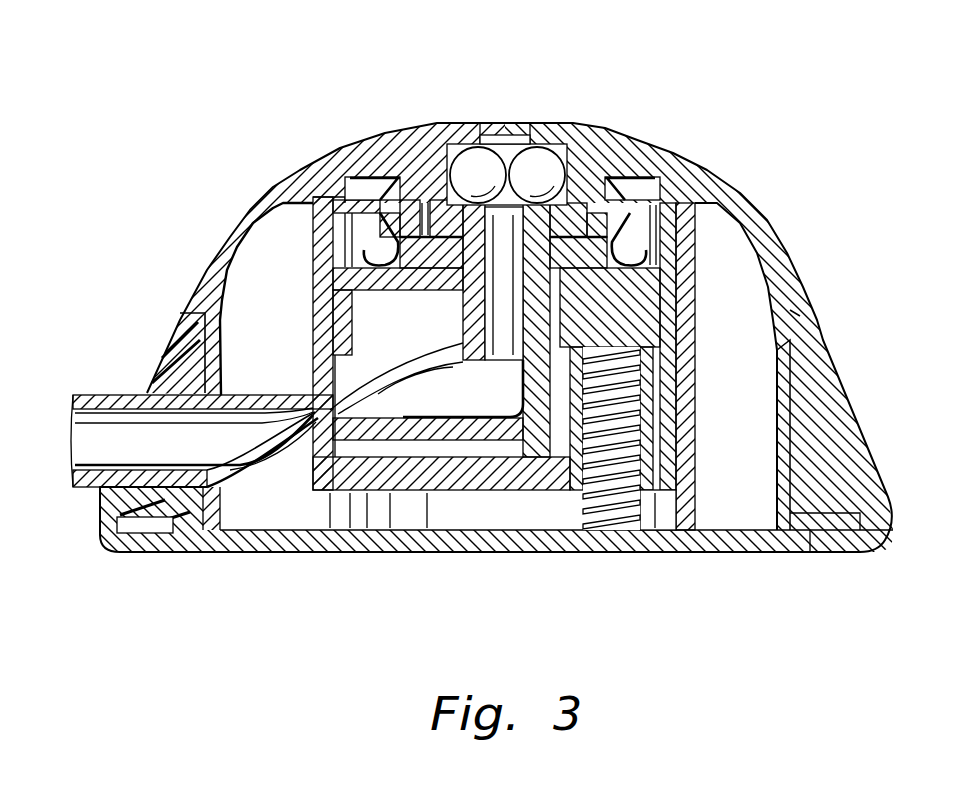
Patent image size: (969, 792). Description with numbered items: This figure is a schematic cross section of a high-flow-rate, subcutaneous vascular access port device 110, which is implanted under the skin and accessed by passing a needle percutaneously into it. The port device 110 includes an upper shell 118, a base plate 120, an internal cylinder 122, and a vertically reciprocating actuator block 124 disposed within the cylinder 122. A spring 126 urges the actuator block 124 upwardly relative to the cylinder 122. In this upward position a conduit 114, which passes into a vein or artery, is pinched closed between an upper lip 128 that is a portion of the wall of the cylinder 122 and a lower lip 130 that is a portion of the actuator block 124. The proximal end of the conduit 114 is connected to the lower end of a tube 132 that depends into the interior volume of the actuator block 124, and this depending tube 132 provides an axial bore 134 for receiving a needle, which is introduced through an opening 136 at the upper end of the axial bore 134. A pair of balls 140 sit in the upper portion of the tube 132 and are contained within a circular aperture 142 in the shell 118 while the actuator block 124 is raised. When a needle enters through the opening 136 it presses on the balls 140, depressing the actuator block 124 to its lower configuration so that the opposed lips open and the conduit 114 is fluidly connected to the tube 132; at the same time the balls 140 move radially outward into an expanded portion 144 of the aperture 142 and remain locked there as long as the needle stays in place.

The port device 110 is at (786, 121).
The conduit 114 is at (127, 392).
The upper shell 118 is at (765, 216).
The base plate 120 is at (673, 552).
The internal cylinder 122 is at (696, 360).
The actuator block 124 is at (490, 487).
The spring 126 is at (585, 505).
The upper lip 128 is at (310, 383).
The lower lip 130 is at (302, 465).
The tube 132 is at (470, 325).
The axial bore 134 is at (505, 365).
The opening 136 is at (523, 128).
The balls 140 is at (523, 168).
The circular aperture 142 is at (457, 140).
The expanded portion 144 is at (410, 137).